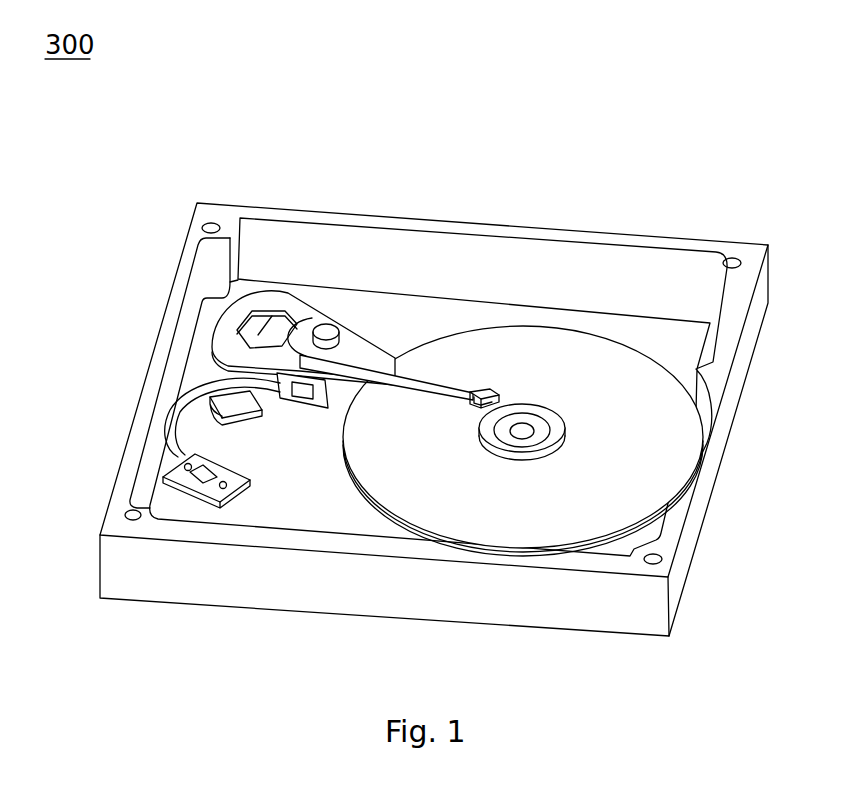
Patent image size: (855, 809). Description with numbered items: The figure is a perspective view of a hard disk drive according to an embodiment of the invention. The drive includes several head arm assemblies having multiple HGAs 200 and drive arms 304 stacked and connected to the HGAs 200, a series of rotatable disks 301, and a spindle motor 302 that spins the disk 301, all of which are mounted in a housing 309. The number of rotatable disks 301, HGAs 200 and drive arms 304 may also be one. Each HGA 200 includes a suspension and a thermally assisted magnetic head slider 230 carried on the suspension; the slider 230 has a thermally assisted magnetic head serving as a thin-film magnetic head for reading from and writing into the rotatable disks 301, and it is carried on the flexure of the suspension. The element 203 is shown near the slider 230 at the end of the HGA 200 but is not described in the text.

The housing 309 is at (697, 287).
The rotatable disk 301 is at (603, 370).
The spindle motor 302 is at (523, 428).
The drive arm 304 is at (350, 340).
The HGA 200 is at (420, 377).
The thermally assisted magnetic head slider 230 is at (473, 401).
The flexure tongue 203 is at (487, 393).